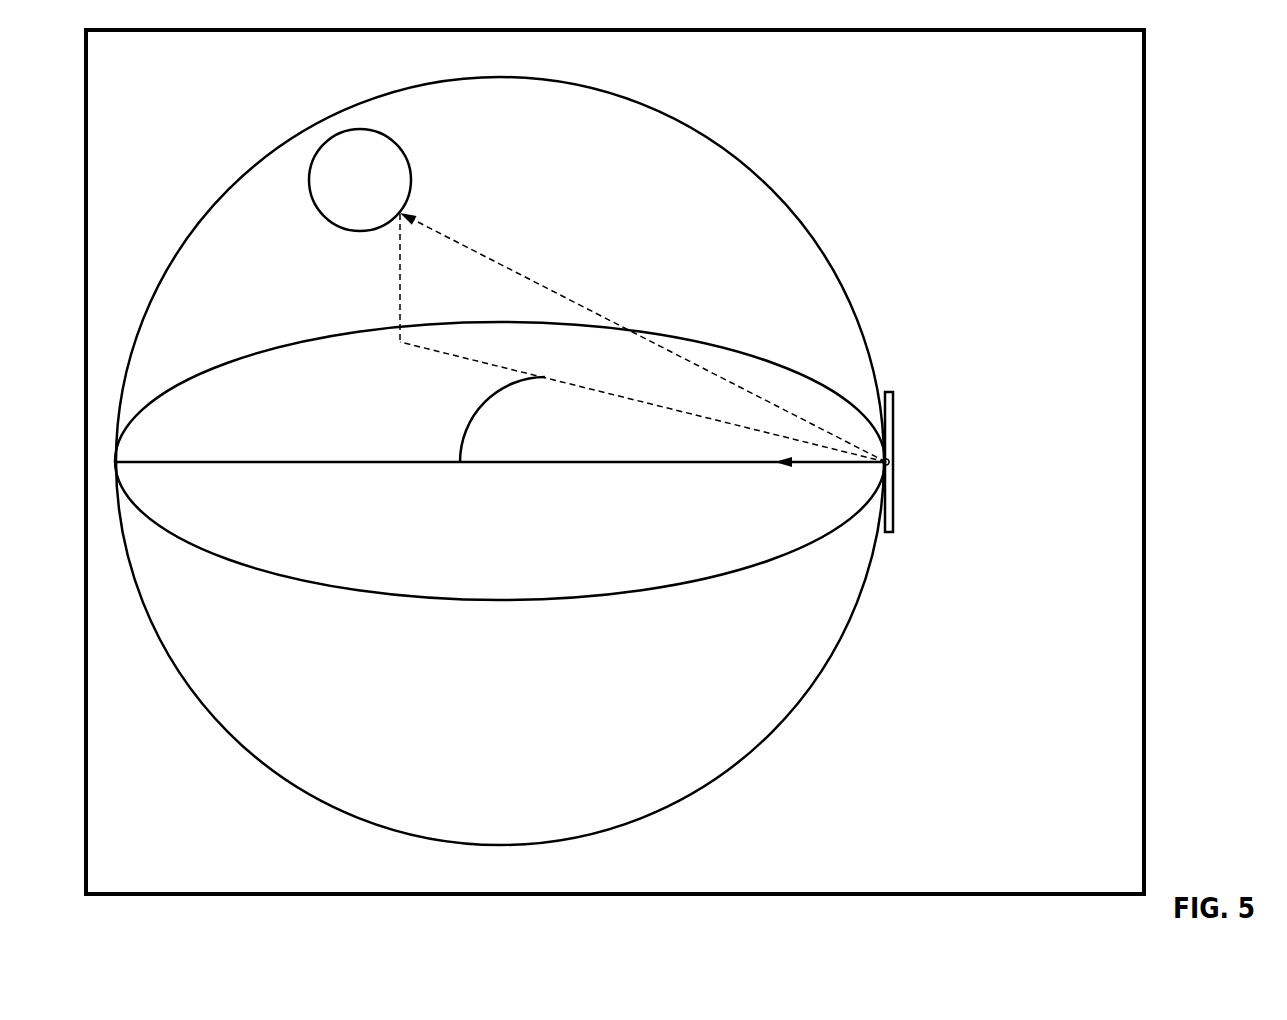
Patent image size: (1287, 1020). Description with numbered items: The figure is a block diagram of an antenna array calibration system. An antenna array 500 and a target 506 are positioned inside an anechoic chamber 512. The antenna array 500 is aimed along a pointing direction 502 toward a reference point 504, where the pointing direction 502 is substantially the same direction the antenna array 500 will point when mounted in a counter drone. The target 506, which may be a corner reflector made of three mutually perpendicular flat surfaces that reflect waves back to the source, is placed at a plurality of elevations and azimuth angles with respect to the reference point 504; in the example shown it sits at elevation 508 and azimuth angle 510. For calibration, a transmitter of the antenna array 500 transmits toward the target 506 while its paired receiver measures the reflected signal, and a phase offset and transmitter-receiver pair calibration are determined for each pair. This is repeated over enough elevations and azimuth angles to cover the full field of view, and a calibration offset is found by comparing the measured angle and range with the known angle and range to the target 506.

The antenna array 500 is at (888, 424).
The pointing direction 502 is at (782, 465).
The reference point 504 is at (893, 462).
The target 506 is at (403, 155).
The elevation 508 is at (398, 312).
The azimuth angle 510 is at (458, 446).
The anechoic chamber 512 is at (943, 30).